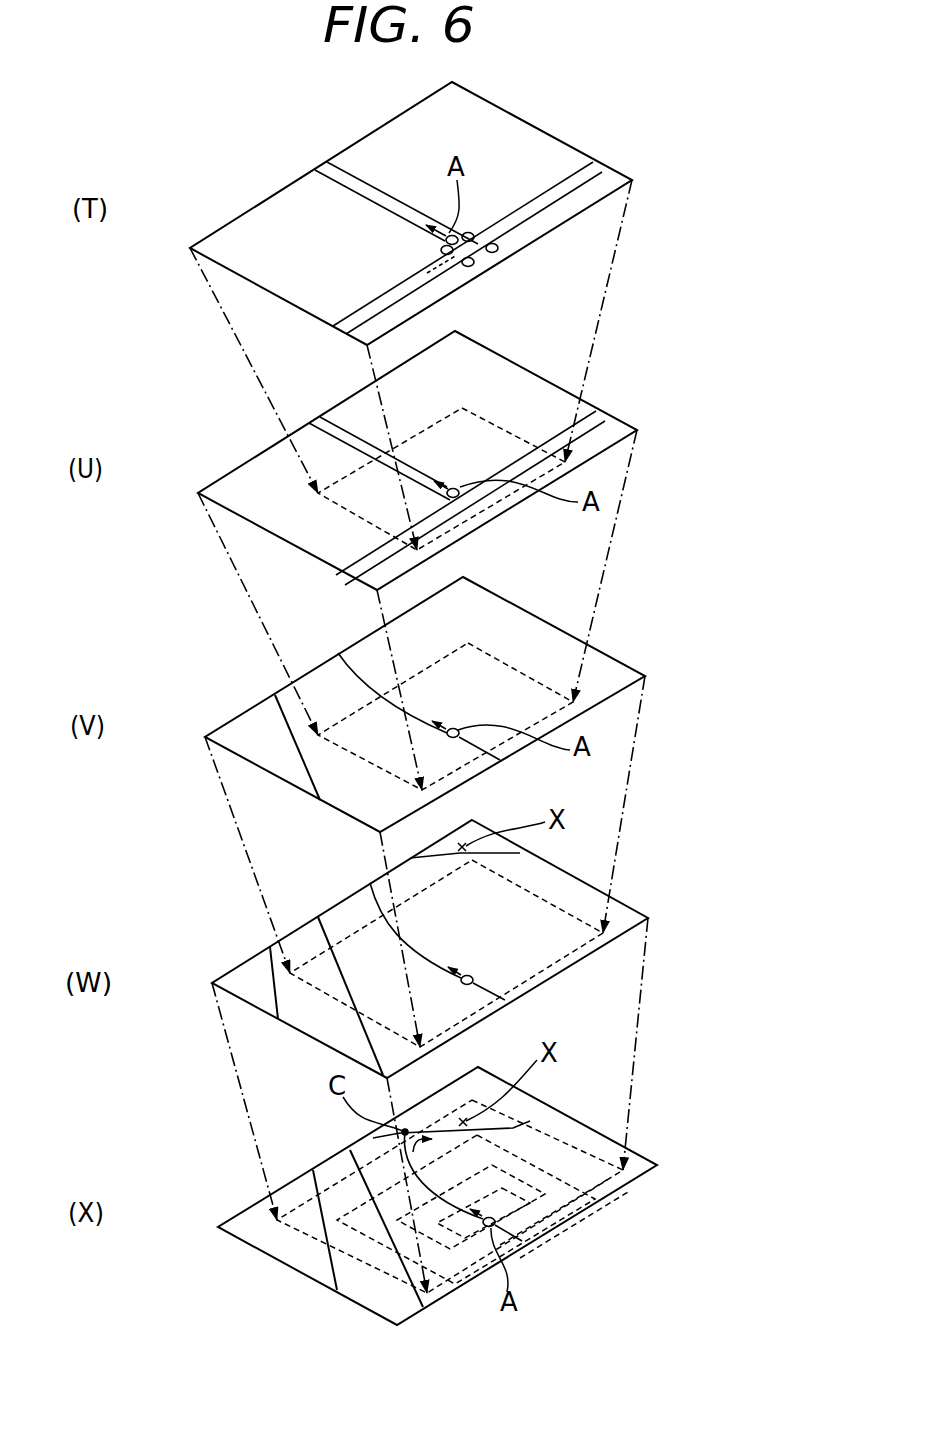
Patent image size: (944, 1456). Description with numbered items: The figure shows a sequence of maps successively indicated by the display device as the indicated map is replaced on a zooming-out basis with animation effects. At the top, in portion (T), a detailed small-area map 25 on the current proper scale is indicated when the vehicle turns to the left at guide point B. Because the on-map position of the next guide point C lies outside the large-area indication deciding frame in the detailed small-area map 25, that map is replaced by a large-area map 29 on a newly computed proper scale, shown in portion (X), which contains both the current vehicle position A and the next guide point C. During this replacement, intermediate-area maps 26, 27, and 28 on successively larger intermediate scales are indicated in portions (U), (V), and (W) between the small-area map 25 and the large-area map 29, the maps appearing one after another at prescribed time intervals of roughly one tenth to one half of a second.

The detailed small-area map 25 is at (567, 141).
The intermediate-area map 26 is at (552, 381).
The intermediate-area map 27 is at (555, 622).
The intermediate-area map 28 is at (582, 879).
The large-area map 29 is at (590, 1123).